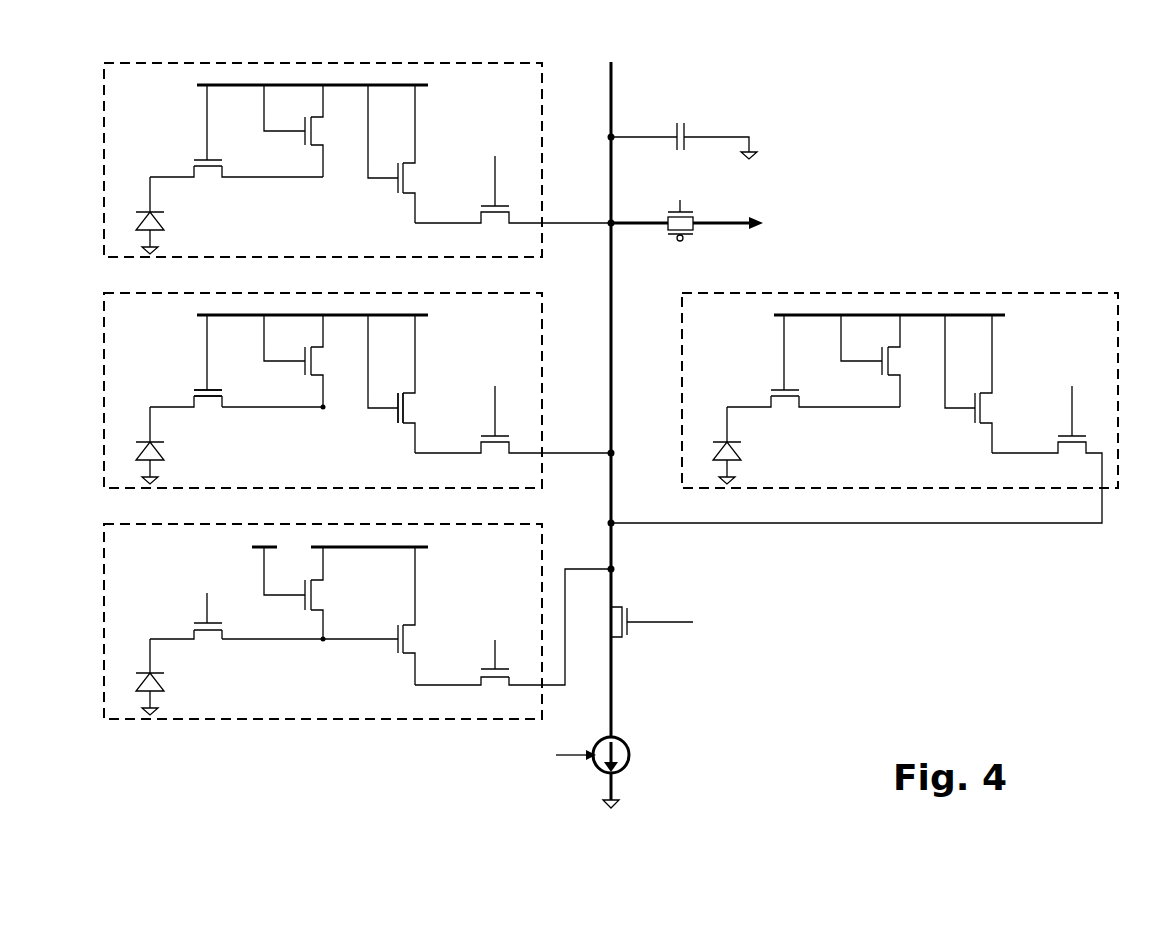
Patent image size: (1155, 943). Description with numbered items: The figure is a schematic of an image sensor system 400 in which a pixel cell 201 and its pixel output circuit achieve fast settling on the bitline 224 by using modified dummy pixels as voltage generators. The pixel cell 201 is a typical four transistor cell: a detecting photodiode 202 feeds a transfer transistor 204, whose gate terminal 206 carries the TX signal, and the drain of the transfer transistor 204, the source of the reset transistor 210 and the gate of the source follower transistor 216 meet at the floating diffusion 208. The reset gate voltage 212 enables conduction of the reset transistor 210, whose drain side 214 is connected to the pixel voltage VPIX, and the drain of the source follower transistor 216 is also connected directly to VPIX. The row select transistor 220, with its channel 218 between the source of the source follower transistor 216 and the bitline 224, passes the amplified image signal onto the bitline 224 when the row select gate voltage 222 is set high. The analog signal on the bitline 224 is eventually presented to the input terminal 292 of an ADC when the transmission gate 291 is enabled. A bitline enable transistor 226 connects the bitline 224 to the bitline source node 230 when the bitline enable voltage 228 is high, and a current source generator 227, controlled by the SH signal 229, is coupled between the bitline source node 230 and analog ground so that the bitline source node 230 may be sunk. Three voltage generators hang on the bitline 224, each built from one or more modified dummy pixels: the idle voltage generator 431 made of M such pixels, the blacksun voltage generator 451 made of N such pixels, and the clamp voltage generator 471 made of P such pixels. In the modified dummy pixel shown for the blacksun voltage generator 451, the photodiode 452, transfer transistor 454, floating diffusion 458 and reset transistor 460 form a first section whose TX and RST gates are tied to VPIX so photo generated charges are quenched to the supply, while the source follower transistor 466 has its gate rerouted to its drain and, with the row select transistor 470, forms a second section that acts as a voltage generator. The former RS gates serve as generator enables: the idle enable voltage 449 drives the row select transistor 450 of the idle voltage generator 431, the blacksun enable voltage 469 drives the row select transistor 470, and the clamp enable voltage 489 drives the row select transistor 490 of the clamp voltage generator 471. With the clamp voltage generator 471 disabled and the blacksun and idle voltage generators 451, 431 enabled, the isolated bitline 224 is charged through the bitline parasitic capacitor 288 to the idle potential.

The image sensor system 400 is at (1044, 98).
The idle voltage generator 431 is at (163, 94).
The idle enable voltage 449 is at (494, 175).
The row select transistor of idle voltage generator 450 is at (495, 224).
The blacksun voltage generator 451 is at (163, 324).
The photodiode 452 is at (165, 456).
The transfer transistor 454 is at (208, 404).
The floating diffusion 458 is at (282, 410).
The reset transistor 460 is at (316, 357).
The source follower transistor 466 is at (412, 418).
The blacksun enable voltage 469 is at (494, 410).
The row select transistor of blacksun voltage generator 470 is at (495, 454).
The clamp voltage generator 471 is at (742, 324).
The clamp enable voltage 489 is at (1071, 405).
The row select transistor of clamp voltage generator 490 is at (1072, 454).
The pixel cell 201 is at (163, 556).
The photodiode 202 is at (165, 689).
The transfer transistor 204 is at (208, 637).
The transfer gate TX 206 is at (209, 598).
The floating diffusion 208 is at (282, 642).
The reset transistor 210 is at (318, 594).
The reset gate voltage 212 is at (300, 595).
The reset transistor drain to VPIX 214 is at (323, 562).
The source follower transistor 216 is at (412, 643).
The row select transistor 218 is at (447, 681).
The row select transistor 220 is at (495, 686).
The row select gate voltage 222 is at (496, 645).
The bitline 224 is at (614, 498).
The bitline enable transistor 226 is at (612, 625).
The current source generator 227 is at (635, 754).
The bitline enable voltage 228 is at (679, 616).
The sample and hold signal SH 229 is at (572, 763).
The bitline source node 230 is at (605, 706).
The bitline parasitic capacitor 288 is at (687, 121).
The transmission gate 291 is at (688, 207).
The input terminal of ADC 292 is at (722, 222).